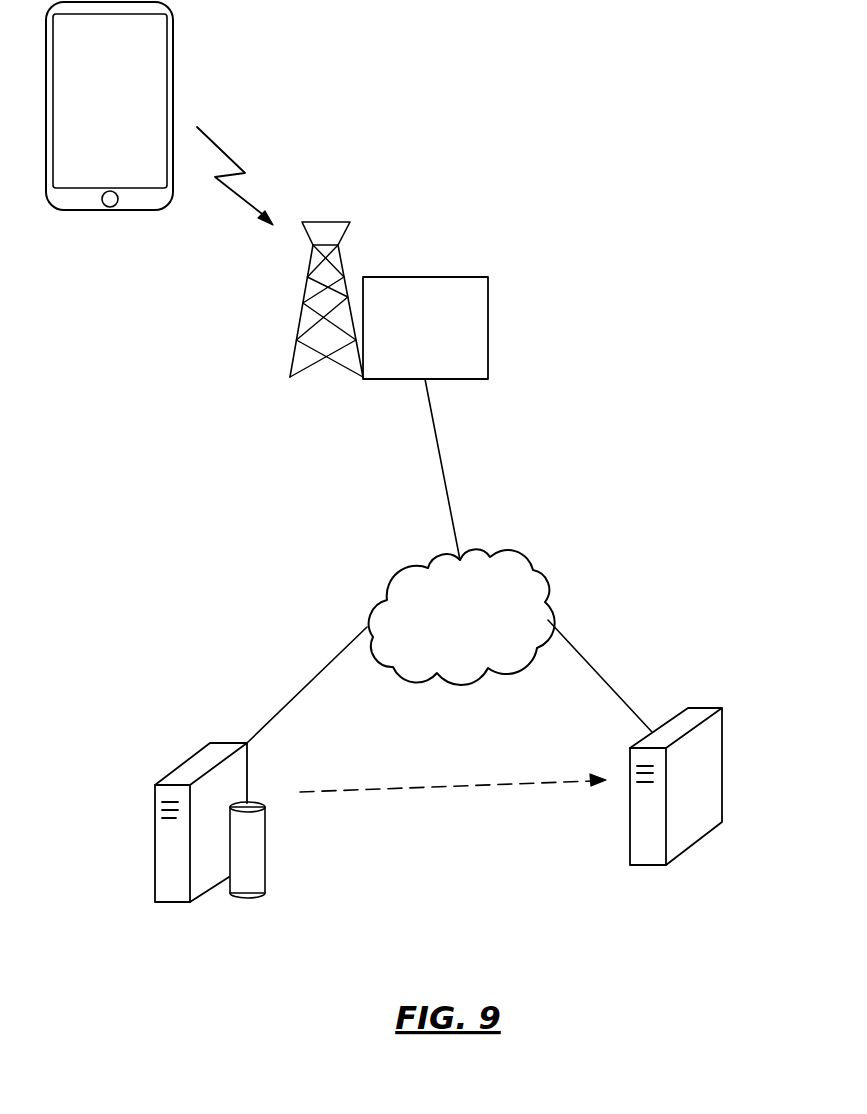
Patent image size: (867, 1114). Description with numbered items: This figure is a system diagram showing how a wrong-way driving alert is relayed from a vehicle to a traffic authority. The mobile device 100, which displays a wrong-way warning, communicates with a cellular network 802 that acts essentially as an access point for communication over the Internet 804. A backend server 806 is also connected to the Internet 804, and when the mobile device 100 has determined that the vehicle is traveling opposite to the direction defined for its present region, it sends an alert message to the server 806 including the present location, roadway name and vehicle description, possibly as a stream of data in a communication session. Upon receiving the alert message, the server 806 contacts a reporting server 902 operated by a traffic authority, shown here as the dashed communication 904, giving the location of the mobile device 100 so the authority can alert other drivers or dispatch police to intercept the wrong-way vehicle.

The mobile device 100 is at (172, 82).
The cellular network 802 is at (380, 277).
The Internet 804 is at (462, 617).
The backend server 806 is at (190, 760).
The reporting server 902 is at (702, 715).
The message transmission 904 is at (500, 790).